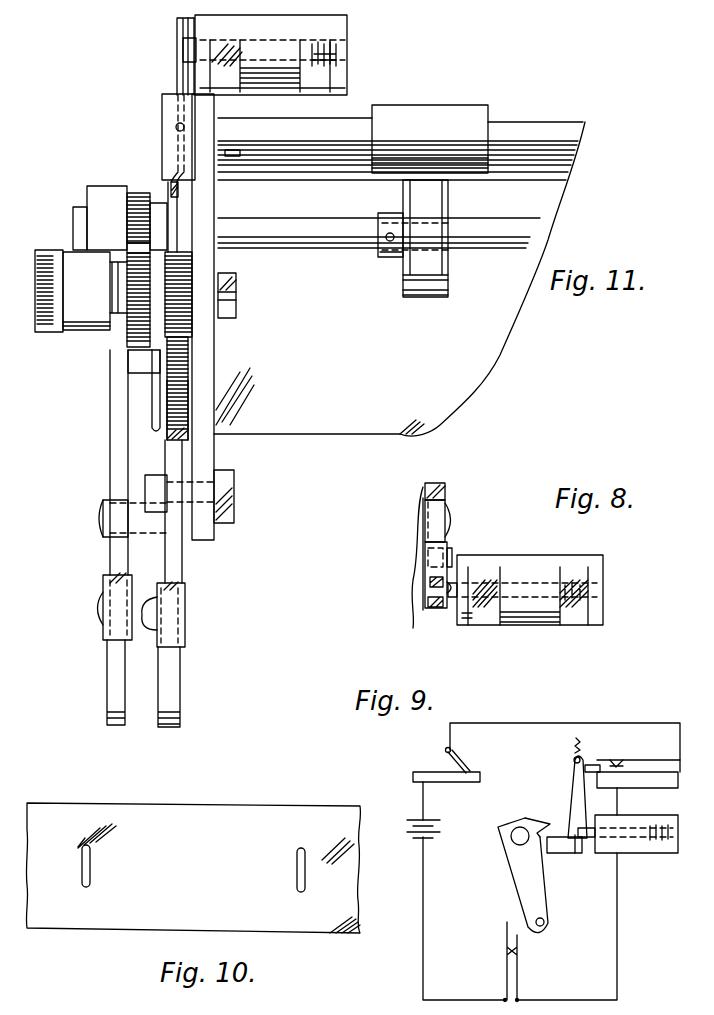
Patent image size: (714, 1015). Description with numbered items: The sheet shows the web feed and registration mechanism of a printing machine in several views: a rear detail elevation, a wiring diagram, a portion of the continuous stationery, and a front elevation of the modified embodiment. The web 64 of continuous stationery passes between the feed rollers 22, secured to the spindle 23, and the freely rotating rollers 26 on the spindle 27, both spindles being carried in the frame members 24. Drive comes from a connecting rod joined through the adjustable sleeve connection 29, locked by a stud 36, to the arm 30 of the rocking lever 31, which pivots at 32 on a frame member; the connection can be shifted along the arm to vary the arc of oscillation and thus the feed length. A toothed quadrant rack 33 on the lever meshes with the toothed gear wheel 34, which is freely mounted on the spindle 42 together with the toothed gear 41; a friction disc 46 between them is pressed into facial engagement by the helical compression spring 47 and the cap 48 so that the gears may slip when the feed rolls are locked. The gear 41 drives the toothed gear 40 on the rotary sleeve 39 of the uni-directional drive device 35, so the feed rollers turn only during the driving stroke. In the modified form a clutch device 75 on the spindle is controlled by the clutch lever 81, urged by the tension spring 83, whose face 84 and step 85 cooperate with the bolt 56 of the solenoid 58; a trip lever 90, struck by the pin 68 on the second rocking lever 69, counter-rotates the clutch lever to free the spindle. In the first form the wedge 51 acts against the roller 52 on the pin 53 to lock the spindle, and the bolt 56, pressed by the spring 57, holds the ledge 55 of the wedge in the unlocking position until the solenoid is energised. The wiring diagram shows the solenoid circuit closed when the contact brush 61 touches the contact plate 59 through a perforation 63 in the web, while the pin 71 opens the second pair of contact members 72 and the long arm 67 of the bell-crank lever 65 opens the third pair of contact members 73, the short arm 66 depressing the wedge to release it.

In FIG. 11, the feed rollers 22 is at (418, 296).
In FIG. 11, the spindle 23 is at (484, 237).
In FIG. 11, the frame members 24 is at (205, 452).
In FIG. 8, the frame members 24 is at (414, 552).
In FIG. 11, the rollers 26 is at (436, 116).
In FIG. 11, the spindle 27 is at (540, 132).
In FIG. 11, the connection 29 is at (185, 606).
In FIG. 11, the arm 30 is at (183, 672).
In FIG. 11, the rocking lever 31 is at (175, 558).
In FIG. 11, the pivot 32 is at (145, 483).
In FIG. 11, the toothed quadrant rack 33 is at (190, 372).
In FIG. 11, the toothed gear wheel 34 is at (192, 326).
In FIG. 11, the uni-directional drive device 35 is at (87, 192).
In FIG. 11, the stud 36 is at (153, 630).
In FIG. 11, the rotary sleeve 39 is at (112, 186).
In FIG. 11, the toothed gear 40 is at (136, 193).
In FIG. 11, the toothed gear 41 is at (132, 328).
In FIG. 11, the spindle 42 is at (240, 300).
In FIG. 11, the friction disc 46 is at (158, 352).
In FIG. 11, the helical compression spring 47 is at (120, 330).
In FIG. 11, the cap 48 is at (88, 330).
In FIG. 8, the wedge 51 is at (445, 492).
In FIG. 9, the wedge 51 is at (568, 783).
In FIG. 8, the roller 52 is at (436, 522).
In FIG. 8, the pin 53 is at (452, 528).
In FIG. 8, the ledge 55 is at (443, 604).
In FIG. 9, the ledge 55 is at (570, 835).
In FIG. 11, the bolt 56 is at (183, 50).
In FIG. 8, the bolt 56 is at (495, 602).
In FIG. 11, the spring 57 is at (347, 52).
In FIG. 8, the spring 57 is at (572, 612).
In FIG. 11, the solenoid 58 is at (345, 86).
In FIG. 8, the solenoid 58 is at (526, 626).
In FIG. 9, the solenoid 58 is at (653, 855).
In FIG. 9, the contact plate 59 is at (468, 783).
In FIG. 9, the contact brush 61 is at (468, 765).
In FIG. 10, the perforation 63 is at (90, 868).
In FIG. 10, the web 64 is at (212, 820).
In FIG. 9, the bell-crank lever 65 is at (522, 873).
In FIG. 9, the short arm 66 is at (535, 823).
In FIG. 9, the long arm 67 is at (543, 910).
In FIG. 11, the pin 68 is at (154, 430).
In FIG. 11, the second rocking lever 69 is at (118, 545).
In FIG. 9, the pin 71 is at (595, 773).
In FIG. 9, the second pair of contact members 72 is at (650, 766).
In FIG. 9, the third pair of contact members 73 is at (517, 970).
In FIG. 11, the clutch device 75 is at (180, 222).
In FIG. 11, the clutch lever 81 is at (182, 190).
In FIG. 11, the tension spring 83 is at (186, 124).
In FIG. 11, the face 84 is at (176, 30).
In FIG. 11, the step 85 is at (186, 74).
In FIG. 11, the trip lever 90 is at (190, 410).